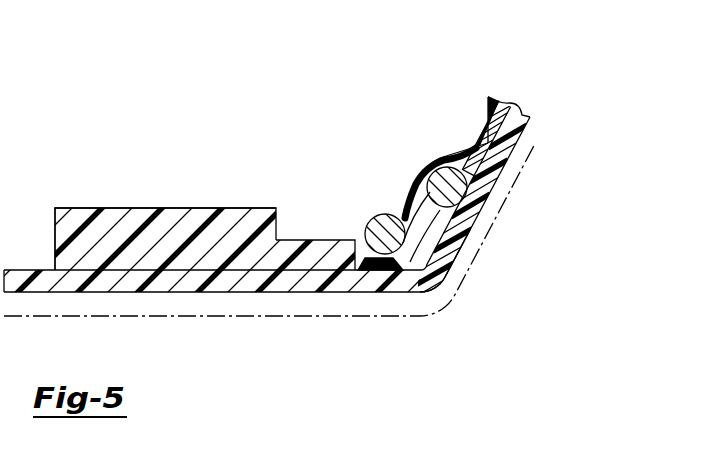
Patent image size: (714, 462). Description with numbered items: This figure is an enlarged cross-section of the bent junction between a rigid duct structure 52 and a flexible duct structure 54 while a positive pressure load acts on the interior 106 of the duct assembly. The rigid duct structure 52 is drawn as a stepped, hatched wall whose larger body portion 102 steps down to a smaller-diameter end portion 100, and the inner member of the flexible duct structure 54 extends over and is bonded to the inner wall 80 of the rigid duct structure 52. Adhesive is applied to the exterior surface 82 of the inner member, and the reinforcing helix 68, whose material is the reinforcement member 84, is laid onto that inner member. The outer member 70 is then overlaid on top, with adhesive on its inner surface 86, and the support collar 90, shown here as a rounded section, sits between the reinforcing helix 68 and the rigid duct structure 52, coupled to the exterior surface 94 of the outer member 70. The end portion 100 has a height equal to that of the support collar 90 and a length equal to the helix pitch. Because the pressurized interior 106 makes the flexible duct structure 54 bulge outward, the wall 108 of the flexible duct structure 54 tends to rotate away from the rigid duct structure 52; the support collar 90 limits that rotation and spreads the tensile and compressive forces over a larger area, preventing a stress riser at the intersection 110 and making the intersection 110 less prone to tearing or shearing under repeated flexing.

The rigid duct structure 52 is at (76, 205).
The flexible duct structure 54 is at (526, 102).
The reinforcing helix 68 is at (462, 170).
The outer member 70 is at (397, 216).
The inner wall 80 is at (222, 292).
The exterior surface 82 is at (452, 197).
The reinforcement member 84 is at (472, 210).
The inner surface 86 is at (452, 243).
The support collar 90 is at (382, 208).
The exterior surface 94 is at (452, 152).
The end portion 100 is at (325, 246).
The body portion 102 is at (229, 222).
The interior 106 is at (97, 317).
The wall 108 is at (436, 290).
The intersection 110 is at (368, 286).